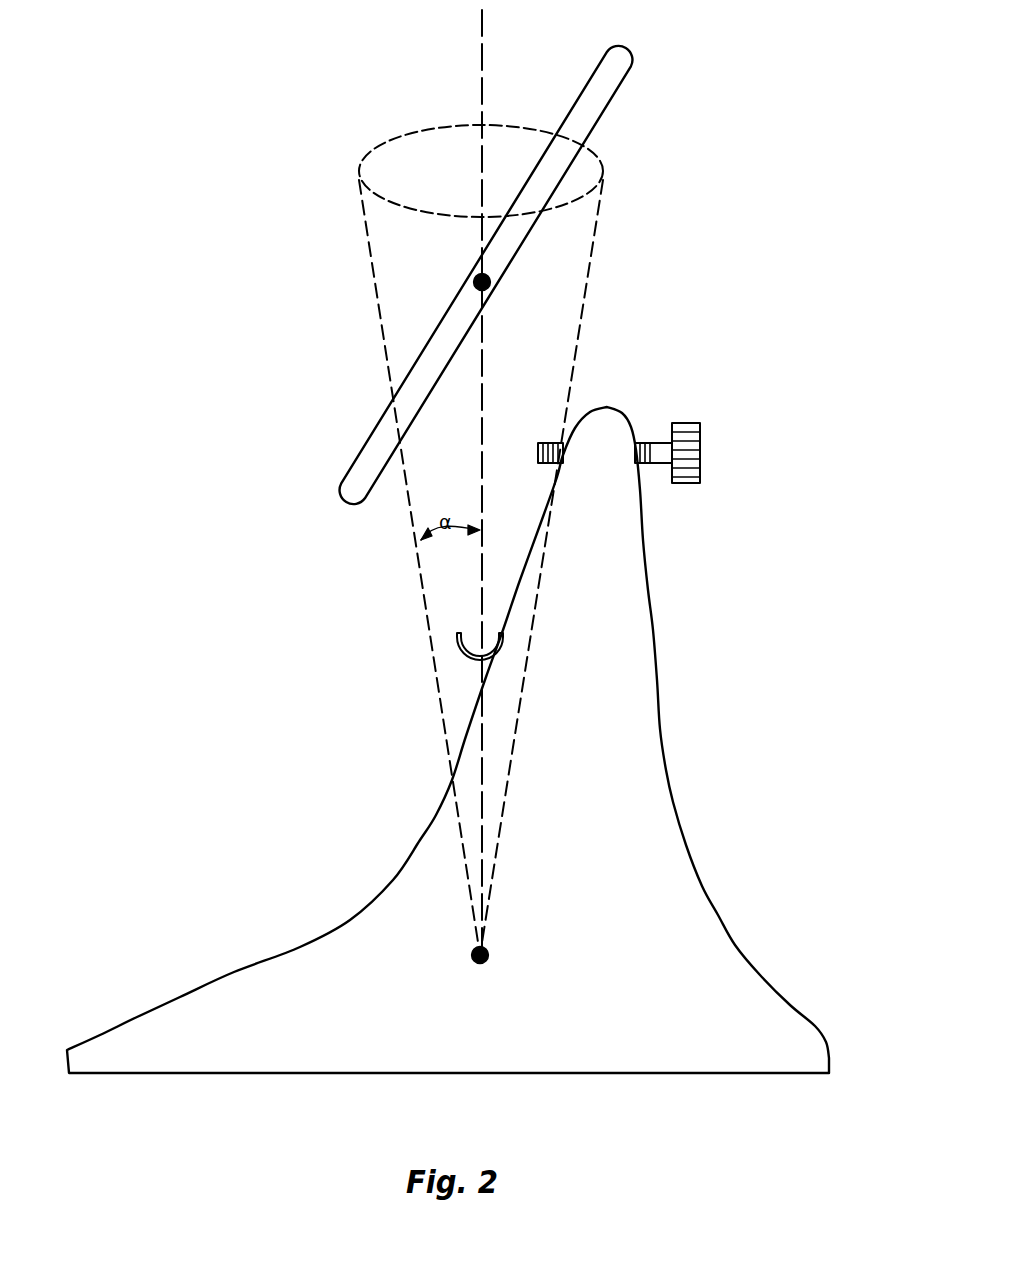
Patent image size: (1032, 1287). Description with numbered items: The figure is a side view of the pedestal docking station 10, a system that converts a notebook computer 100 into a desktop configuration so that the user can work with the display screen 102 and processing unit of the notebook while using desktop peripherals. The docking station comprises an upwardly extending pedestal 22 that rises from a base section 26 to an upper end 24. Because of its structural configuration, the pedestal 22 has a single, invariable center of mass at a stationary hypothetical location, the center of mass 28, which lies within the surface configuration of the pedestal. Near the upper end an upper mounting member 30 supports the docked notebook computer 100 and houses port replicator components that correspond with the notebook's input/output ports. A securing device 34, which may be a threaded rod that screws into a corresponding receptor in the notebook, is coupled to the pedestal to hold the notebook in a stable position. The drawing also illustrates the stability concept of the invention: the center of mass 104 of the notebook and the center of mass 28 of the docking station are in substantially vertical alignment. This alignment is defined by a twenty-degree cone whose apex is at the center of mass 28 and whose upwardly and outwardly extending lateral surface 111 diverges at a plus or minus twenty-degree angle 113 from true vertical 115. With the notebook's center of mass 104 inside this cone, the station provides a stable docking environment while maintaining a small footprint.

The pedestal docking station 10 is at (228, 653).
The upwardly extending pedestal 22 is at (640, 729).
The upper end 24 is at (645, 540).
The base section 26 is at (813, 1043).
The center of mass 28 is at (470, 958).
The upper mounting member 30 is at (455, 637).
The securing device 34 is at (700, 448).
The notebook computer 100 is at (562, 263).
The display screen 102 is at (577, 103).
The center of mass of the notebook 104 is at (475, 278).
The lateral surface 111 is at (588, 284).
The angle 113 is at (415, 522).
The optical axis 115 is at (482, 48).